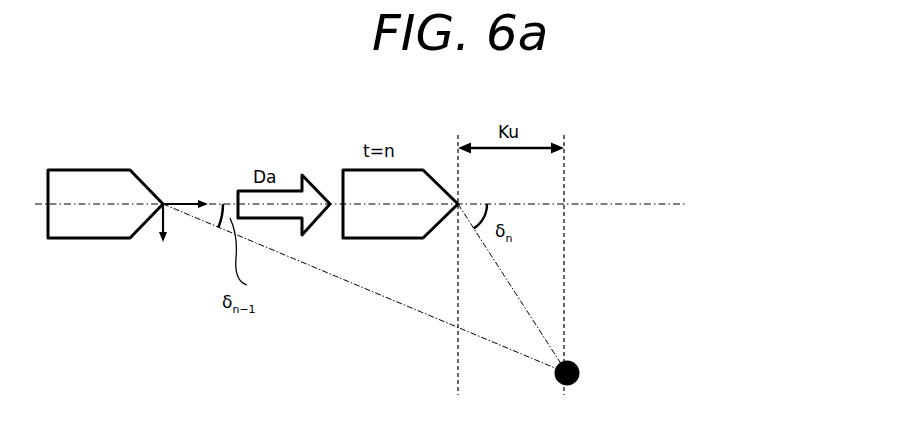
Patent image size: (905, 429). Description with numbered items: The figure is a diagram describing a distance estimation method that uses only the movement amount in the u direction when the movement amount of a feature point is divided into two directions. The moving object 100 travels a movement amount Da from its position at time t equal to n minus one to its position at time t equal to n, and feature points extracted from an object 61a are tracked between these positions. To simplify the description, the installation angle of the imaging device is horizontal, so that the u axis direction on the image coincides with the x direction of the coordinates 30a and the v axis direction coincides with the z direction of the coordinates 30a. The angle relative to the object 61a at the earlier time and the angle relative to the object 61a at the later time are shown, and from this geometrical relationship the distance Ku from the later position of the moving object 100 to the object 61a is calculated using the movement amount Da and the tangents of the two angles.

The moving object 100 is at (75, 240).
The coordinates 30a is at (158, 260).
The object 61a is at (586, 383).